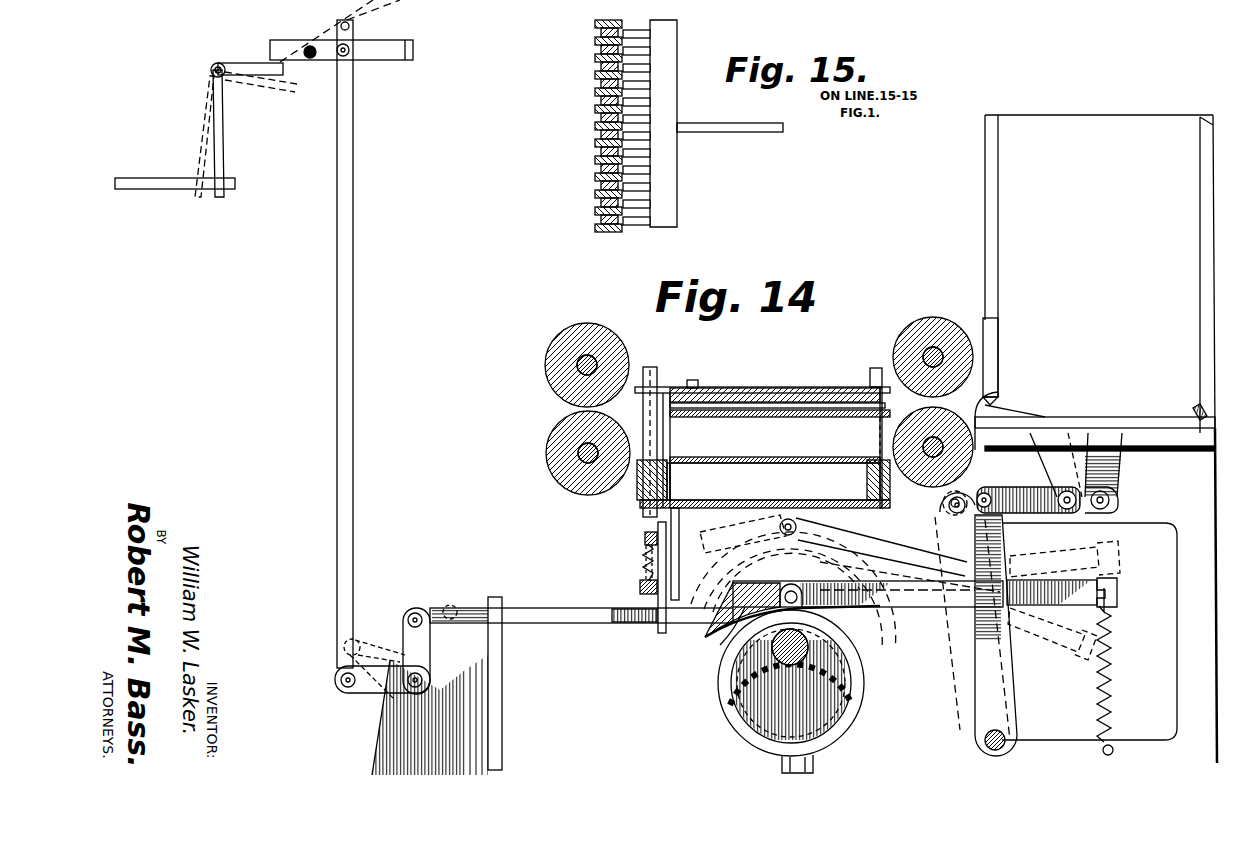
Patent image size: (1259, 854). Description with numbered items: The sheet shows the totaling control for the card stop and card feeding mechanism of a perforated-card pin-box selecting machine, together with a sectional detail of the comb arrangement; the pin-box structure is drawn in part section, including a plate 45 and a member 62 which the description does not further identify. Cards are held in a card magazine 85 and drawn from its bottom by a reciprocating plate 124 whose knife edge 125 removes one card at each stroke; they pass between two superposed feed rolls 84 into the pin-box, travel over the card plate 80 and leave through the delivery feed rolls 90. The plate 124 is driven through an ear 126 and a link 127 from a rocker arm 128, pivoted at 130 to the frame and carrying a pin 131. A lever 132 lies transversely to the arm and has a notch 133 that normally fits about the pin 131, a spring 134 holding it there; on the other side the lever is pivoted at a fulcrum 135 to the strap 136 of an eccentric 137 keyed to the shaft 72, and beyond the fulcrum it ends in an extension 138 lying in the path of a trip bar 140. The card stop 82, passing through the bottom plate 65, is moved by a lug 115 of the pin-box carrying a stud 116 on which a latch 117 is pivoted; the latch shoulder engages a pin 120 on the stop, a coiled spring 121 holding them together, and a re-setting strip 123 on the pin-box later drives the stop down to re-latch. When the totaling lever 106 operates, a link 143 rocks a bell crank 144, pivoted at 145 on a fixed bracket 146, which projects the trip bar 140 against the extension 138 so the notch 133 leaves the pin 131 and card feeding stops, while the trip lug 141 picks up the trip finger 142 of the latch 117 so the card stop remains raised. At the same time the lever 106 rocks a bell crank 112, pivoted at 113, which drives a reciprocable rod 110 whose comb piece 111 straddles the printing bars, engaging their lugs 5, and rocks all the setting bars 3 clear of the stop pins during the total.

In FIG. 15, the setting bar 3 is at (598, 70).
In FIG. 15, the lug 5 is at (598, 133).
In FIG. 14, the plate 45 is at (775, 390).
In FIG. 14, the bar 62 is at (765, 458).
In FIG. 14, the bottom plate 65 is at (842, 506).
In FIG. 14, the shaft 72 is at (812, 650).
In FIG. 14, the card plate 80 is at (810, 420).
In FIG. 14, the card stop 82 is at (676, 492).
In FIG. 14, the feed rolls 84 is at (933, 317).
In FIG. 14, the card magazine 85 is at (1096, 439).
In FIG. 14, the delivery feed rolls 90 is at (562, 382).
In FIG. 14, the totaling lever 106 is at (283, 40).
In FIG. 14, the reciprocable rod 110 is at (160, 171).
In FIG. 15, the reciprocable rod 110 is at (725, 128).
In FIG. 15, the comb piece 111 is at (665, 68).
In FIG. 14, the bell crank 112 is at (224, 150).
In FIG. 14, the pivot 113 is at (211, 70).
In FIG. 14, the lug 115 is at (740, 505).
In FIG. 14, the stud 116 is at (844, 553).
In FIG. 14, the latch 117 is at (648, 528).
In FIG. 14, the pin 120 is at (640, 583).
In FIG. 14, the coiled spring 121 is at (640, 560).
In FIG. 14, the re-setting strip 123 is at (688, 386).
In FIG. 14, the reciprocating plate 124 is at (990, 397).
In FIG. 14, the knife edge 125 is at (1198, 412).
In FIG. 14, the ear 126 is at (1112, 482).
In FIG. 14, the link 127 is at (1020, 492).
In FIG. 14, the rocker arm 128 is at (985, 690).
In FIG. 14, the pivot 130 is at (985, 746).
In FIG. 14, the pin 131 is at (1002, 622).
In FIG. 14, the lever 132 is at (920, 610).
In FIG. 14, the notch 133 is at (990, 636).
In FIG. 14, the spring 134 is at (1098, 690).
In FIG. 14, the fulcrum 135 is at (788, 590).
In FIG. 14, the strap 136 is at (740, 730).
In FIG. 14, the eccentric 137 is at (757, 702).
In FIG. 14, the extension 138 is at (712, 660).
In FIG. 14, the trip bar 140 is at (580, 618).
In FIG. 14, the trip lug 141 is at (630, 627).
In FIG. 14, the trip finger 142 is at (655, 638).
In FIG. 14, the link 143 is at (354, 525).
In FIG. 14, the bell crank 144 is at (342, 690).
In FIG. 14, the pivot 145 is at (408, 685).
In FIG. 14, the fixed bracket 146 is at (395, 745).